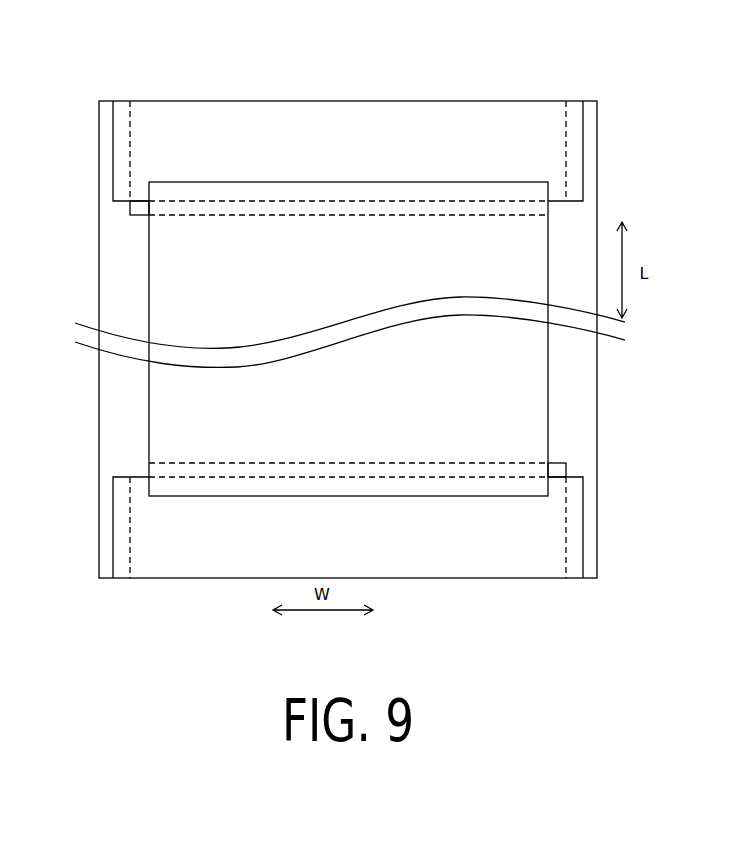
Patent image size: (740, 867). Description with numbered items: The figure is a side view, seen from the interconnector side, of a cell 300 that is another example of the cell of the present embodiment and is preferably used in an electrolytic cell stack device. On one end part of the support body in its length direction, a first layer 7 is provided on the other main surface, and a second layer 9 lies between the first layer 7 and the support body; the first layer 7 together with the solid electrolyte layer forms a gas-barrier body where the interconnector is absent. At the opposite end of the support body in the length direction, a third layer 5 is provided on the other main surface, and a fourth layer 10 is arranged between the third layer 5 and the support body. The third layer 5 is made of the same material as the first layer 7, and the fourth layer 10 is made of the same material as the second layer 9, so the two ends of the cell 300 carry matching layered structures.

The cell 300 is at (196, 70).
The third layer 5 is at (238, 133).
The fourth layer 10 is at (135, 215).
The second layer 9 is at (555, 468).
The first layer 7 is at (452, 543).